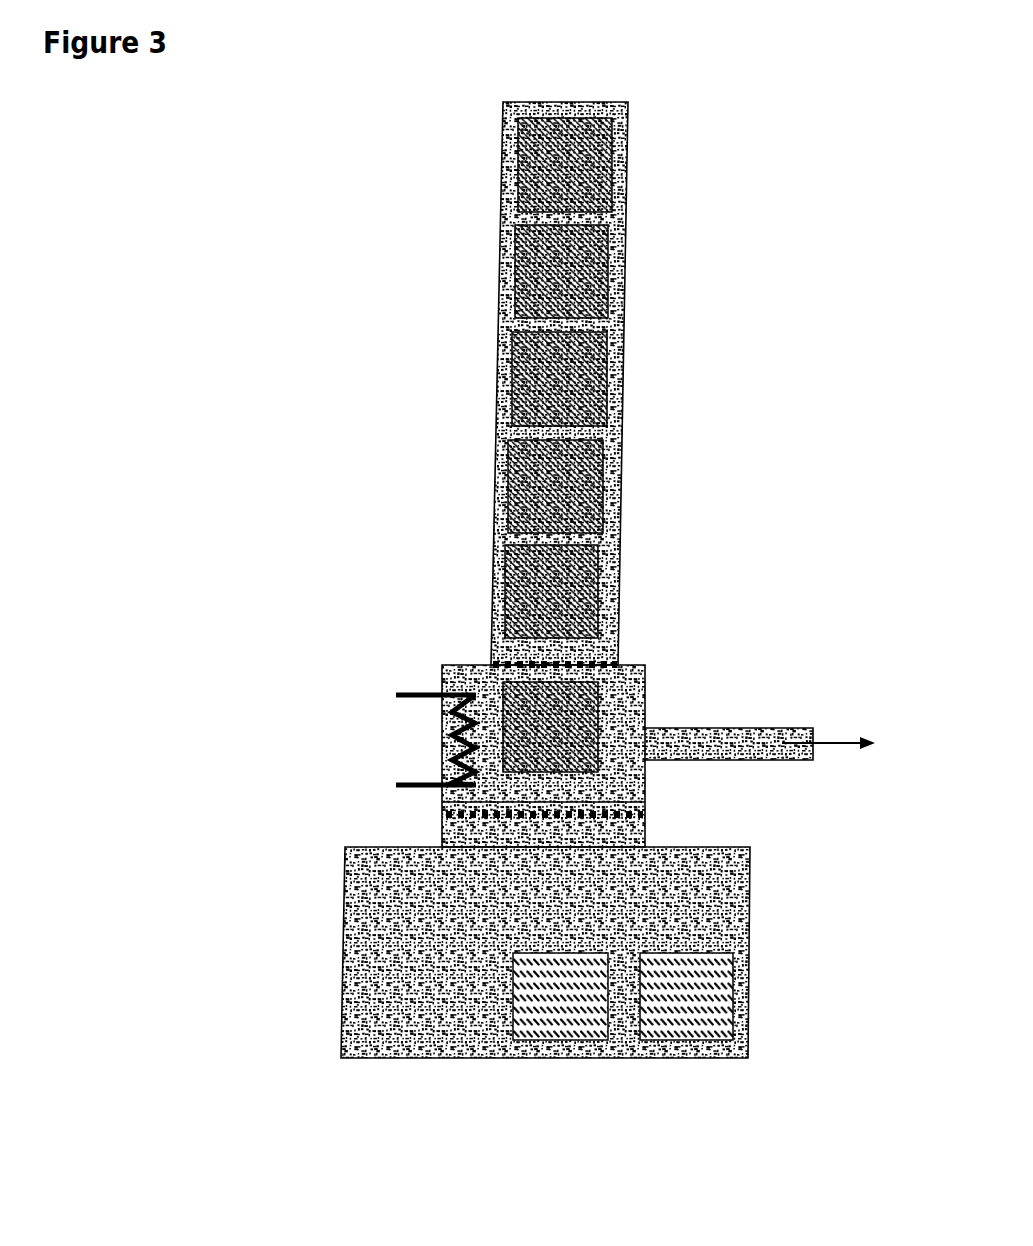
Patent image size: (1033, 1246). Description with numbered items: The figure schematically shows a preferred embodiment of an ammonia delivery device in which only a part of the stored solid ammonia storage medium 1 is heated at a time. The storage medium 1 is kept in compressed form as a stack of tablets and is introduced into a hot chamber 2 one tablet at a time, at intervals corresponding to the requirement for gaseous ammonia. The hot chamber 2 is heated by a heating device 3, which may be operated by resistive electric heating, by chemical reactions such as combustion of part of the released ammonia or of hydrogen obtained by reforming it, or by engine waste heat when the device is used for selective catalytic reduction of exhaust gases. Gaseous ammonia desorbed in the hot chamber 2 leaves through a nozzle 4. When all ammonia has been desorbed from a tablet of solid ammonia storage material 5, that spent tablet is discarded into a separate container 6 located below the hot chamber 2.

The solid ammonia storage medium 1 is at (557, 700).
The hot chamber 2 is at (617, 693).
The heating device 3 is at (417, 787).
The nozzle 4 is at (779, 748).
The tablet of solid ammonia storage material 5 is at (560, 997).
The separate container 6 is at (407, 907).